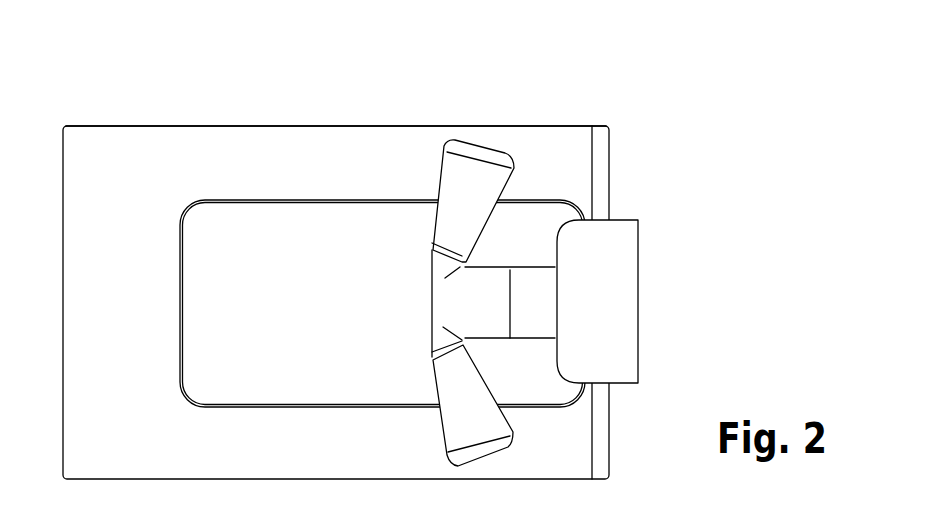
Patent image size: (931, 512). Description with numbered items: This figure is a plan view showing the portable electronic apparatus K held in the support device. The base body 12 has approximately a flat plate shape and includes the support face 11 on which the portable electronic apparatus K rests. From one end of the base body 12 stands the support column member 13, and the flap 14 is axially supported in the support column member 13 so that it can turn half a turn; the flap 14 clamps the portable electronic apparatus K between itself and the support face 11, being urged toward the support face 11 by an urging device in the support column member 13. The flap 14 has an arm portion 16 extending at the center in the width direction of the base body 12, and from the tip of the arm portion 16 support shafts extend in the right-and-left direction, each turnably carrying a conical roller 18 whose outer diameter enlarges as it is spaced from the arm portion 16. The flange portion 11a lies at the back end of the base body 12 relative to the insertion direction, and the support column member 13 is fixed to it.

The support face 11 is at (210, 153).
The base body 12 is at (118, 126).
The flange portion 11a is at (602, 203).
The portable electronic apparatus K is at (325, 217).
The flap 14 is at (557, 255).
The arm portion 16 is at (525, 287).
The conical roller 18 is at (447, 175).
The support column member 13 is at (628, 305).